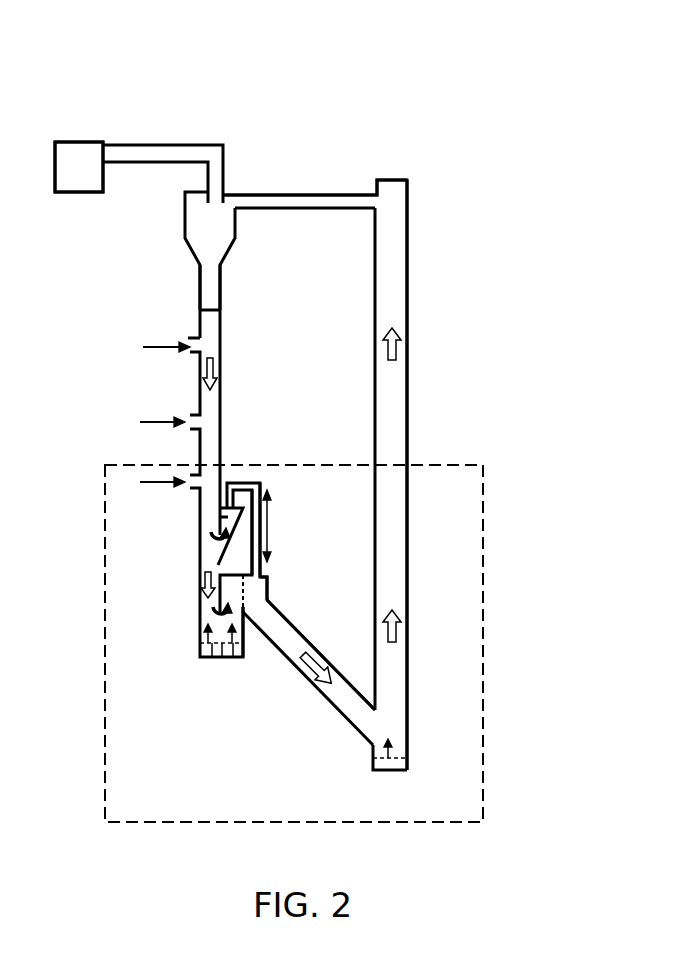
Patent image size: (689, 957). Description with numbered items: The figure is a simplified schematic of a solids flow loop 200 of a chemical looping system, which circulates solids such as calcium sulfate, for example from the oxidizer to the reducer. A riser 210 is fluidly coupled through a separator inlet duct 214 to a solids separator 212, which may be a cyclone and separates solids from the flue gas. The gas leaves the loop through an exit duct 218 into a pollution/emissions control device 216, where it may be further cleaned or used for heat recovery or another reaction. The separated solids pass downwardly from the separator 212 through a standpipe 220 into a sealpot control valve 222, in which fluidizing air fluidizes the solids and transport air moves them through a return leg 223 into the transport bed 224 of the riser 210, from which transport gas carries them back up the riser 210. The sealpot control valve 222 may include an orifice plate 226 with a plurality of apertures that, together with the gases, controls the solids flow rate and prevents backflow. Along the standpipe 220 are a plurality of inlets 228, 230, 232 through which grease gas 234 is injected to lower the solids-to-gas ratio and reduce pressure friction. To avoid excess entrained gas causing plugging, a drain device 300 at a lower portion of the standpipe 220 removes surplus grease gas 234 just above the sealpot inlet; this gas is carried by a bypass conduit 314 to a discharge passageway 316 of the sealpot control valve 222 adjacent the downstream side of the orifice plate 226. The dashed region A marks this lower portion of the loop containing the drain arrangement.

The solids flow loop 200 is at (330, 50).
The riser 210 is at (408, 428).
The solids separator 212 is at (212, 217).
The separator inlet duct 214 is at (285, 195).
The pollution/emissions control device 216 is at (73, 180).
The exit duct 218 is at (152, 145).
The standpipe 220 is at (220, 298).
The sealpot control valve 222 is at (198, 605).
The return leg 223 is at (313, 690).
The transport bed 224 is at (392, 772).
The orifice plate 226 is at (244, 590).
The inlet 228 is at (188, 353).
The inlet 230 is at (188, 435).
The inlet 232 is at (198, 490).
The grease gas 234 is at (160, 338).
The drain device 300 is at (268, 480).
The bypass conduit 314 is at (268, 520).
The discharge passageway 316 is at (268, 601).
The detail region A is at (484, 530).